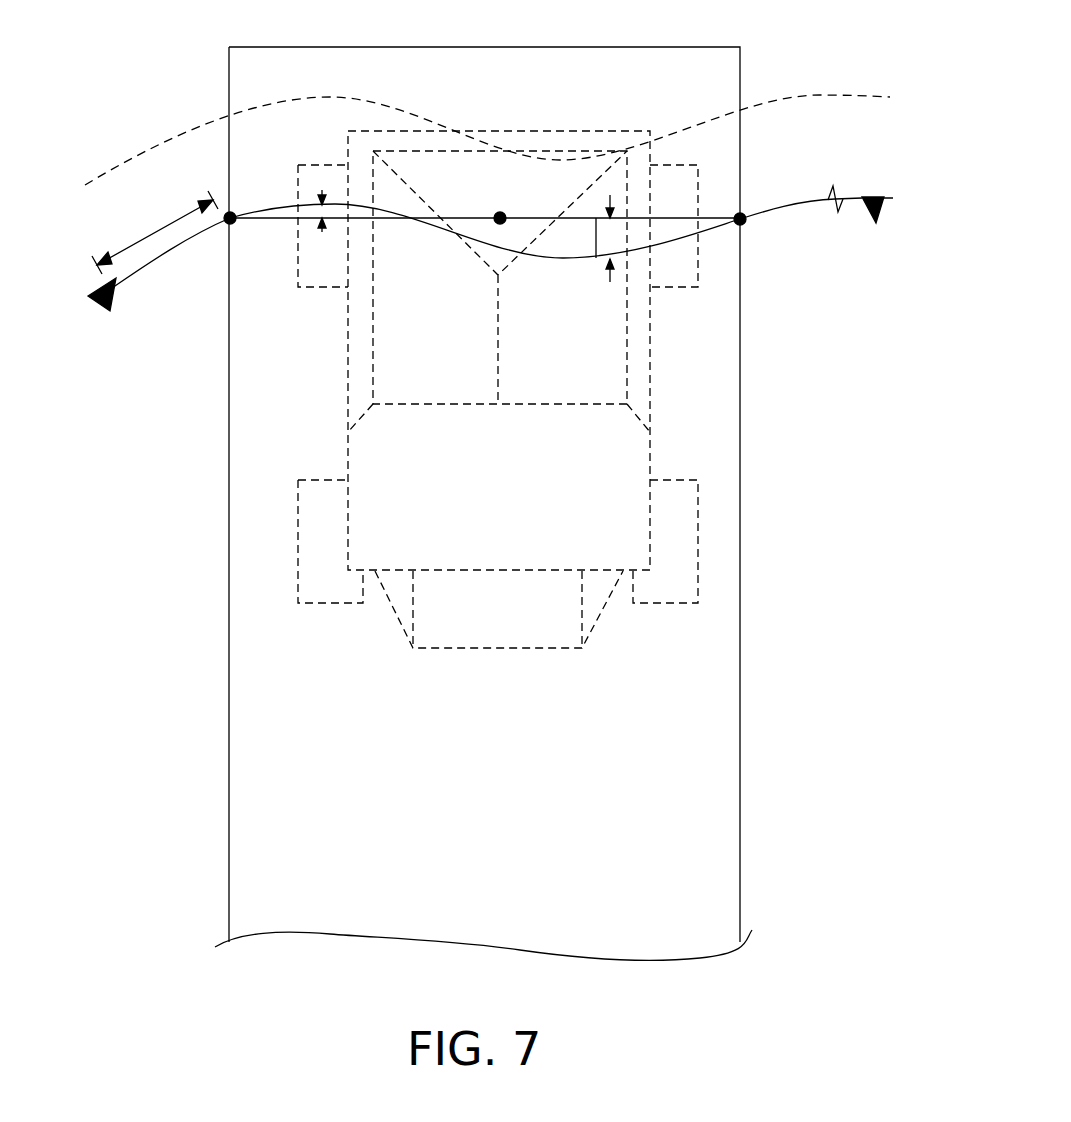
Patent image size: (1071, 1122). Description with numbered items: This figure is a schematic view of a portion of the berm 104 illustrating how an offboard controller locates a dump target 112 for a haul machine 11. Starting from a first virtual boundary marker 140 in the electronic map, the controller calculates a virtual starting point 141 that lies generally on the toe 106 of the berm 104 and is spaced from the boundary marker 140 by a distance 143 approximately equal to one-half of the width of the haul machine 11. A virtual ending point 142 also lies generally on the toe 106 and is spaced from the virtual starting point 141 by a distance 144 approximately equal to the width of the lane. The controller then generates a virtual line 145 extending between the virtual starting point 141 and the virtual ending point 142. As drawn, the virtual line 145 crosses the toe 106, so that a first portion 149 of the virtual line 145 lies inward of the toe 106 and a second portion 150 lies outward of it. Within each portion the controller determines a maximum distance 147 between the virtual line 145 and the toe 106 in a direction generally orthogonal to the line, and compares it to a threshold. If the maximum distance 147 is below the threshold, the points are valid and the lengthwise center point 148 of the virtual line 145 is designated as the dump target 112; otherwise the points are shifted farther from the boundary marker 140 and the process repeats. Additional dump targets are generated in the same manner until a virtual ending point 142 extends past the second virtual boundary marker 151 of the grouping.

The haul machine 11 is at (402, 620).
The berm 104 is at (803, 130).
The toe 106 is at (783, 205).
The dump target 112 is at (507, 163).
The first virtual boundary marker 140 is at (102, 307).
The virtual starting point 141 is at (228, 221).
The virtual ending point 142 is at (745, 225).
The distance 143 is at (152, 233).
The distance 144 is at (740, 768).
The virtual line 145 is at (270, 220).
The maximum distance 147 is at (317, 207).
The lengthwise center point 148 is at (505, 212).
The first portion 149 is at (385, 220).
The second portion 150 is at (675, 217).
The second virtual boundary marker 151 is at (873, 217).